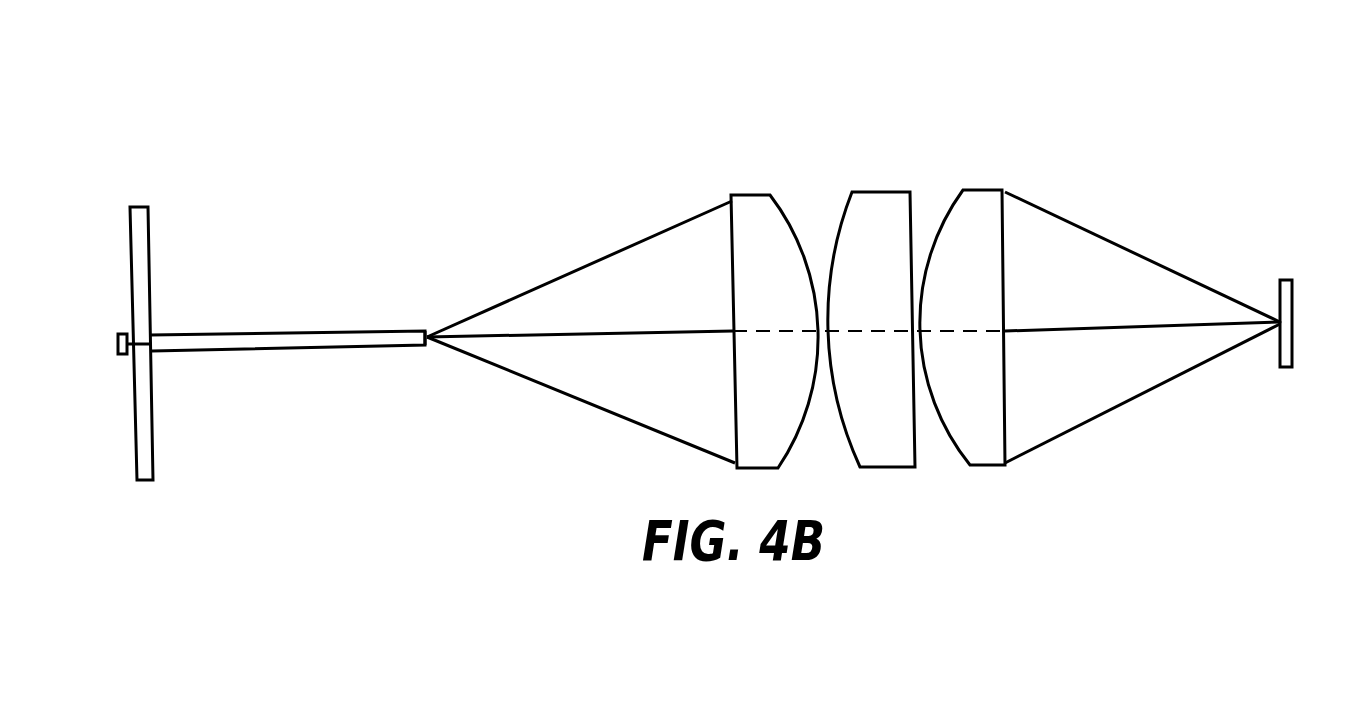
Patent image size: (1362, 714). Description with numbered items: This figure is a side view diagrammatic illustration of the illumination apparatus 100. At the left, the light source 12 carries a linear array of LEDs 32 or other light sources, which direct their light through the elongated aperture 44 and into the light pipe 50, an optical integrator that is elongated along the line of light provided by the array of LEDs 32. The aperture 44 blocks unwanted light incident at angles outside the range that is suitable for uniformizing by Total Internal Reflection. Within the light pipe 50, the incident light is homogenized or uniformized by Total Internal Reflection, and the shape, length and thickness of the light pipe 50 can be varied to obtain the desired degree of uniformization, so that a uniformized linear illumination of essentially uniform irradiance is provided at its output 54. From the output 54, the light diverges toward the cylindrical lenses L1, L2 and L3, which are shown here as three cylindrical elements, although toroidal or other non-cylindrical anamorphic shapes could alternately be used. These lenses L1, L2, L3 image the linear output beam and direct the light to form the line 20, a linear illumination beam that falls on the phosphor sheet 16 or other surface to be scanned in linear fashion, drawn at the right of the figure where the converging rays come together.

The illumination apparatus 100 is at (704, 261).
The light source 12 is at (111, 320).
The LEDs 32 is at (118, 345).
The elongated aperture 44 is at (158, 351).
The light pipe 50 is at (322, 328).
The output 54 is at (430, 347).
The cylindrical lens L1 is at (753, 193).
The cylindrical lens L2 is at (885, 190).
The cylindrical lens L3 is at (983, 190).
The line 20 is at (1277, 320).
The phosphor sheet 16 is at (1295, 337).